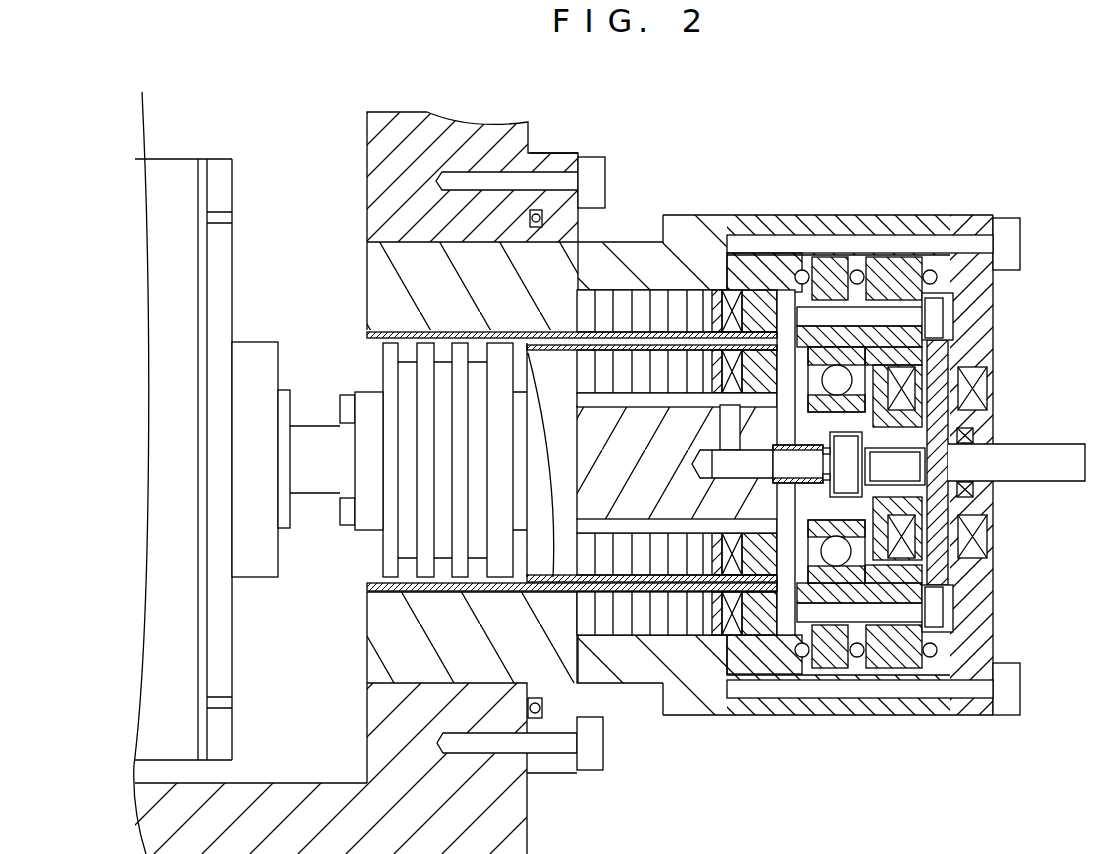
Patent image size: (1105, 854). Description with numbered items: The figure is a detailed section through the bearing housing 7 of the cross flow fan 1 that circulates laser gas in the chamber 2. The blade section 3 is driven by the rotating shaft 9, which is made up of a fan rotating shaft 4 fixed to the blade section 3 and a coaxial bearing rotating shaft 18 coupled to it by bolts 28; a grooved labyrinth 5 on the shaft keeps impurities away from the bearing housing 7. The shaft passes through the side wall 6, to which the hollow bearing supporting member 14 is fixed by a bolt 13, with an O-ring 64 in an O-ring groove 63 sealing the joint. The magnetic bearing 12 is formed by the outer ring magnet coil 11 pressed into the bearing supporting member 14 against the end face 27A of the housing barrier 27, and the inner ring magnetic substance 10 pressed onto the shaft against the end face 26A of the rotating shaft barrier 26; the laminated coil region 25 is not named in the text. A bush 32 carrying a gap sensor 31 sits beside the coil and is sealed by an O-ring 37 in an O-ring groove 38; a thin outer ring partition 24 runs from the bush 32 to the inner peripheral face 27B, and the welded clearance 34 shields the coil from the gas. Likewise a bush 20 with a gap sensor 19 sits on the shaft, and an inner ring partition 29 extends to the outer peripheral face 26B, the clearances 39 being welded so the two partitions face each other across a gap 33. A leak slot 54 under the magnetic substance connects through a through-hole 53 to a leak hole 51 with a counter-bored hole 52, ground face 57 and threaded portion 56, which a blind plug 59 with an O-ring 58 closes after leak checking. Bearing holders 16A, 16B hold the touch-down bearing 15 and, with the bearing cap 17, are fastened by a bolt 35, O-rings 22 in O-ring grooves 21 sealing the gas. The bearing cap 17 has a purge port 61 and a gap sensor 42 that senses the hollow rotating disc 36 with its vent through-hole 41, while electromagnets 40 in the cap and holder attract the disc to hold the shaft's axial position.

The cross flow fan 1 is at (232, 138).
The chamber 2 is at (428, 112).
The blade section 3 is at (152, 160).
The fan rotating shaft 4 is at (278, 345).
The labyrinth 5 is at (385, 570).
The side wall 6 is at (530, 113).
The bearing housing 7 is at (848, 130).
The rotating shaft 9 is at (374, 407).
The inner ring magnetic substance 10 is at (565, 334).
The outer ring magnet coil 11 is at (580, 315).
The magnetic bearing 12 is at (572, 428).
The bolt 13 is at (598, 155).
The bearing supporting member 14 is at (668, 215).
The touch-down bearing 15 is at (838, 565).
The bearing holder 16A is at (806, 698).
The bearing holder 16B is at (906, 698).
The bearing cap 17 is at (993, 316).
The bearing rotating shaft 18 is at (517, 468).
The gap sensor 19 is at (720, 540).
The bush 20 is at (750, 535).
The O-ring groove 21 is at (822, 260).
The O-ring 22 is at (803, 270).
The outer ring partition 24 is at (385, 330).
The stator 25 is at (650, 290).
The rotating shaft barrier 26 is at (543, 560).
The end face 26A is at (598, 535).
The outer peripheral face 26B is at (547, 590).
The housing barrier 27 is at (385, 605).
The end face 27A is at (577, 630).
The inner peripheral face 27B is at (440, 595).
The bolt 28 is at (340, 413).
The inner ring partition 29 is at (487, 334).
The gap sensor 31 is at (718, 290).
The bush 32 is at (738, 253).
The gap 33 is at (812, 355).
The clearance 34 is at (370, 330).
The bolt 35 is at (1020, 240).
The rotating disc 36 is at (990, 572).
The O-ring 37 is at (772, 258).
The O-ring groove 38 is at (760, 292).
The clearance 39 is at (525, 575).
The electromagnet 40 is at (975, 385).
The vent through-hole 41 is at (985, 497).
The gap sensor 42 is at (993, 440).
The leak hole 51 is at (710, 470).
The counter-bored hole 52 is at (895, 466).
The through-hole 53 is at (720, 425).
The leak slot 54 is at (628, 407).
The threaded portion 56 is at (753, 450).
The ground face 57 is at (823, 468).
The O-ring 58 is at (826, 485).
The blind plug 59 is at (825, 452).
The purge port 61 is at (993, 435).
The O-ring groove 63 is at (530, 213).
The O-ring 64 is at (530, 228).